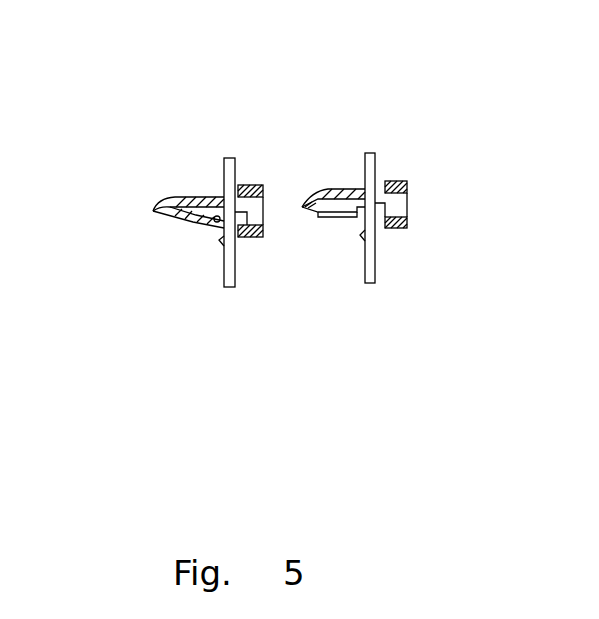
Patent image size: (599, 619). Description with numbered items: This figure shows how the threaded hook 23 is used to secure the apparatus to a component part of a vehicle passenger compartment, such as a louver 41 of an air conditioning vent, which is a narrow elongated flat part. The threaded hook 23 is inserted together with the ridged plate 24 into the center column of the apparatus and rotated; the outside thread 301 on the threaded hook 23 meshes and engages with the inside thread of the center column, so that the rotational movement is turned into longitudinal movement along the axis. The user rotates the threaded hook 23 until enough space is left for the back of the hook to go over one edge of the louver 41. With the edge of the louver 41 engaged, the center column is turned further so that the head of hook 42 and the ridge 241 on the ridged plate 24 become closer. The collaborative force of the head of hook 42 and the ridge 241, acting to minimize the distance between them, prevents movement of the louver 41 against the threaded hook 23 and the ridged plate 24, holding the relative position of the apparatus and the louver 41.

The threaded hook 23 is at (393, 182).
The ridged plate 24 is at (228, 157).
The ridge 241 is at (220, 240).
The outside thread 301 is at (250, 188).
The louver 41 is at (193, 222).
The head of hook 42 is at (163, 216).